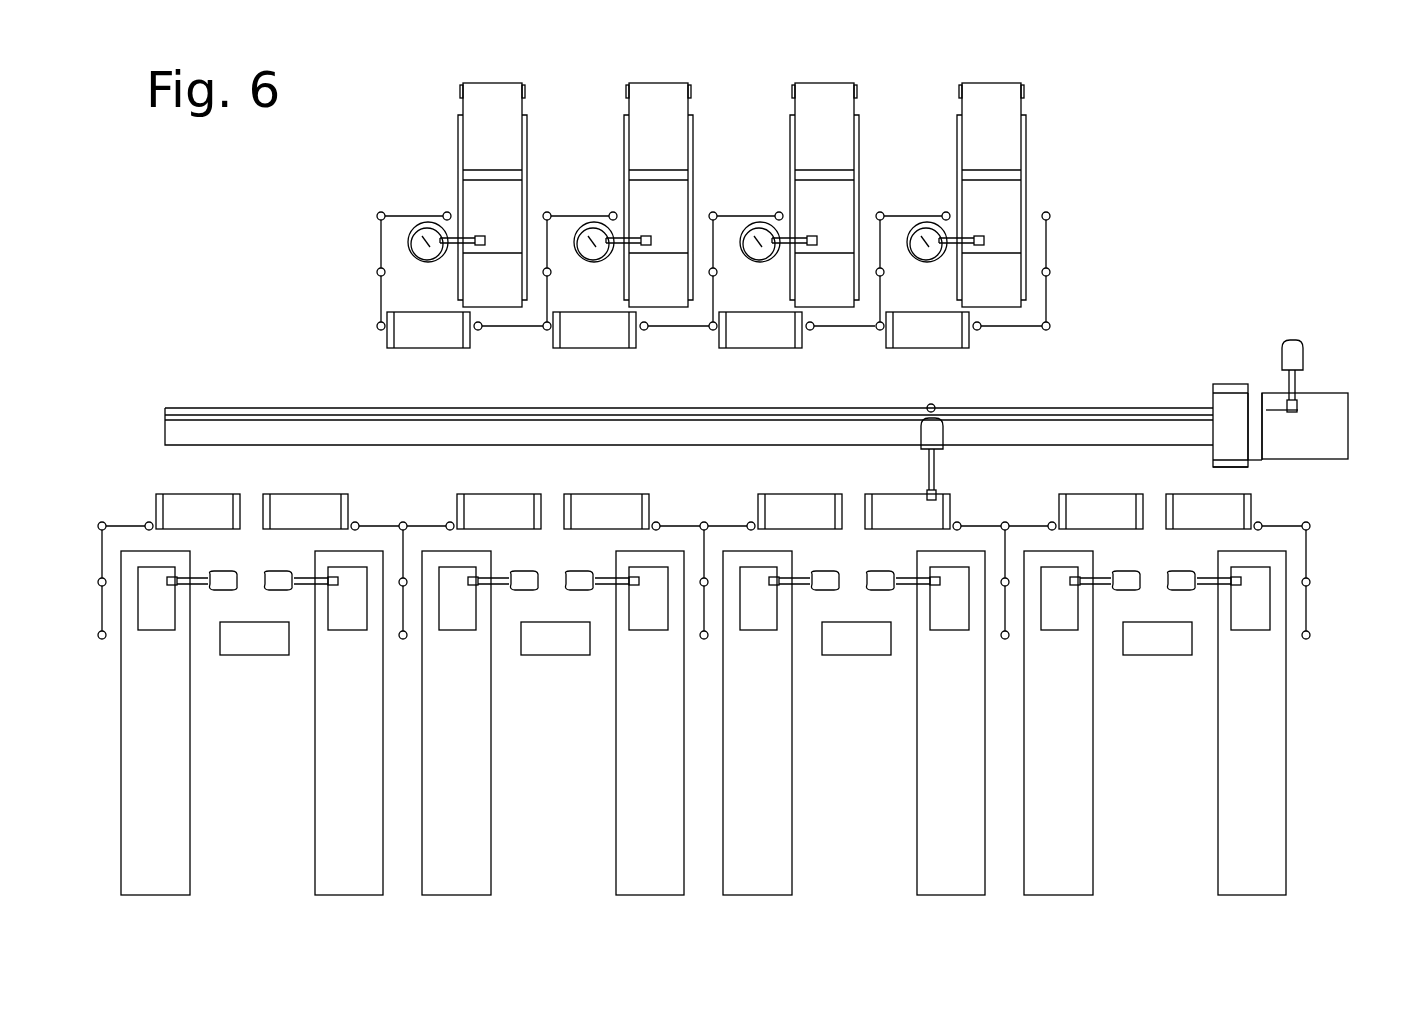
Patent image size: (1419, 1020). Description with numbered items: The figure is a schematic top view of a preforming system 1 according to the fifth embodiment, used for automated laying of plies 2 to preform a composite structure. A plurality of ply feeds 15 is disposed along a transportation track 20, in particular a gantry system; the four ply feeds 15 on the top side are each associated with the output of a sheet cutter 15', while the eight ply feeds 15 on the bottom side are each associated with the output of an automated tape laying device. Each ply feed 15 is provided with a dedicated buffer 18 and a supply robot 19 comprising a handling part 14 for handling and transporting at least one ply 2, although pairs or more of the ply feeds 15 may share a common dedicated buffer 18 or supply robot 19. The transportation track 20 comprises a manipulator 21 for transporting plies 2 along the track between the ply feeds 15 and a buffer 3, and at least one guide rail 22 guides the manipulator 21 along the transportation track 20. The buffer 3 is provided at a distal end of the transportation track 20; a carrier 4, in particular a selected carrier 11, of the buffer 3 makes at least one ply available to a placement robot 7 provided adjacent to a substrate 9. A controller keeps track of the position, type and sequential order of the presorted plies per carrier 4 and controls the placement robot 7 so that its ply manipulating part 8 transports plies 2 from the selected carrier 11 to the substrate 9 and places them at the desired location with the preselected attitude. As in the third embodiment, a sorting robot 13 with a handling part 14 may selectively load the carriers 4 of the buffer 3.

The preforming system 1 is at (1262, 135).
The ply 2 is at (1249, 392).
The buffer 3 is at (1237, 465).
The carrier 4 is at (1258, 400).
The placement robot 7 is at (1297, 357).
The ply manipulating part 8 is at (1300, 412).
The substrate 9 is at (1322, 435).
The selected carrier 11 is at (1258, 455).
The sorting robot 13 is at (938, 418).
The handling part 14 is at (938, 496).
The ply feed 15 is at (703, 461).
The sheet cutter 15' is at (742, 195).
The dedicated buffer 18 is at (703, 420).
The supply robot 19 is at (703, 396).
The transportation track 20 is at (1118, 408).
The manipulator 21 is at (983, 405).
The guide rail 22 is at (270, 420).